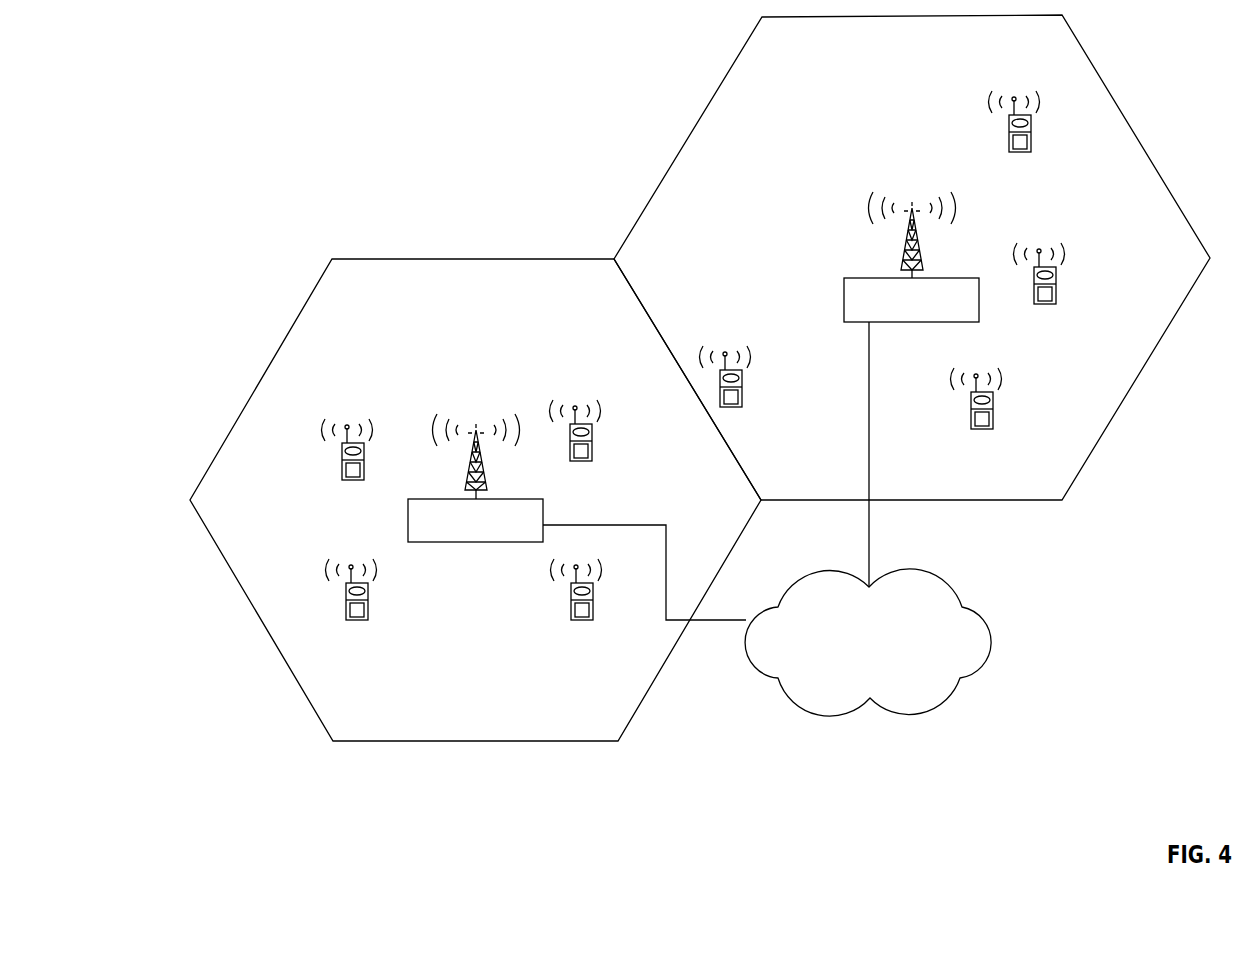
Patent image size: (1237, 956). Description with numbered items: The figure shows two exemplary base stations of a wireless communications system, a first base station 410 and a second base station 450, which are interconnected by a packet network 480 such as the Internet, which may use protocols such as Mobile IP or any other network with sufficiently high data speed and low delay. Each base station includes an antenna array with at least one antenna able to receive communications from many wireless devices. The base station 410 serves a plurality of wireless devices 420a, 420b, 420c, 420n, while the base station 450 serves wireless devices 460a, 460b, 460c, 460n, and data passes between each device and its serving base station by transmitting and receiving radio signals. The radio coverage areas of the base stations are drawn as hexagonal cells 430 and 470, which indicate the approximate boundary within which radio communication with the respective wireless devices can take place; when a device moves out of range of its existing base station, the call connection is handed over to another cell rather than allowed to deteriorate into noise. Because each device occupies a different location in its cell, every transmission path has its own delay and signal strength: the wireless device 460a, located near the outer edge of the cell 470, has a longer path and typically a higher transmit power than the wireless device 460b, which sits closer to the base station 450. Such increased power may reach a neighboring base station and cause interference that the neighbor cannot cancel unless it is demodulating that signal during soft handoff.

The base station 410 is at (455, 542).
The wireless device 420a is at (343, 467).
The wireless device 420b is at (368, 617).
The wireless device 420c is at (593, 590).
The wireless device 420n is at (593, 432).
The hexagonal cell 430 is at (278, 352).
The base station 450 is at (940, 322).
The wireless device 460a is at (743, 383).
The wireless device 460b is at (1033, 128).
The wireless device 460c is at (994, 413).
The wireless device 460n is at (1058, 273).
The hexagonal cell 470 is at (1132, 128).
The packet network 480 is at (995, 647).